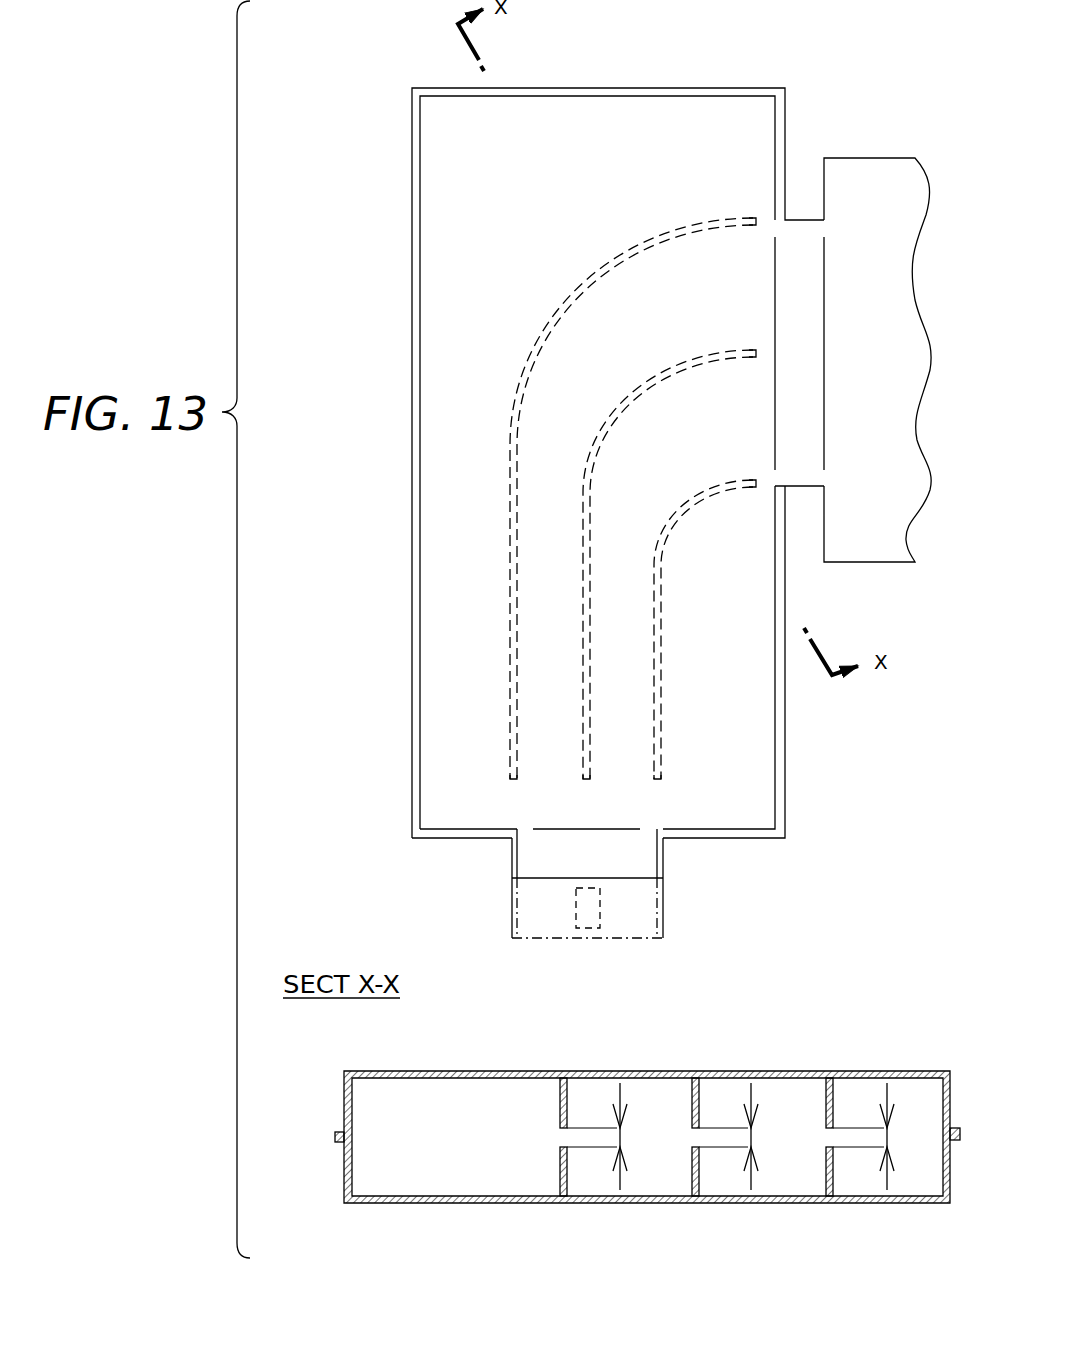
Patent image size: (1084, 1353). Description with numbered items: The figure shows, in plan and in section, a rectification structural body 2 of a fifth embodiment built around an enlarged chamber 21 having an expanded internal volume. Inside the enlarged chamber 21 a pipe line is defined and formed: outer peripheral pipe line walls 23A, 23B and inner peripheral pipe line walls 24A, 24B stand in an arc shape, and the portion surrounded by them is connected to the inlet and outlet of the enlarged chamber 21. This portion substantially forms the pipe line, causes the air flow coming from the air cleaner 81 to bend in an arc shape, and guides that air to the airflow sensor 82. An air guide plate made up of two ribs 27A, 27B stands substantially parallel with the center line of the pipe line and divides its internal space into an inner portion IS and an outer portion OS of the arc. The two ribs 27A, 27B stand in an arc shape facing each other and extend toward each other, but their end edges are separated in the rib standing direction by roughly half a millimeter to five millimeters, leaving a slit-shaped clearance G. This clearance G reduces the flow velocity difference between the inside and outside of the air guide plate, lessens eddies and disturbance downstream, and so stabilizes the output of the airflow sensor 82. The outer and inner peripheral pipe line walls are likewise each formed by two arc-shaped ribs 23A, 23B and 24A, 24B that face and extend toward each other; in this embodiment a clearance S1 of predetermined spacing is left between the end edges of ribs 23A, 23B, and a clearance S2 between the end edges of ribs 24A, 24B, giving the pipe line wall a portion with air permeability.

The rectification structural body 2 is at (611, 645).
The enlarged chamber 21 is at (470, 280).
The outer peripheral pipe line wall 23A is at (500, 665).
The outer peripheral pipe line wall 23B is at (557, 1180).
The rib 27A is at (575, 703).
The rib 27B is at (690, 1180).
The inner peripheral pipe line wall 24A is at (676, 762).
The inner peripheral pipe line wall 24B is at (825, 1180).
The air cleaner 81 is at (857, 196).
The airflow sensor 82 is at (607, 915).
The outer portion OS is at (585, 366).
The inner portion IS is at (667, 468).
The clearance S1 is at (608, 1136).
The clearance S2 is at (876, 1136).
The clearance G is at (736, 1136).